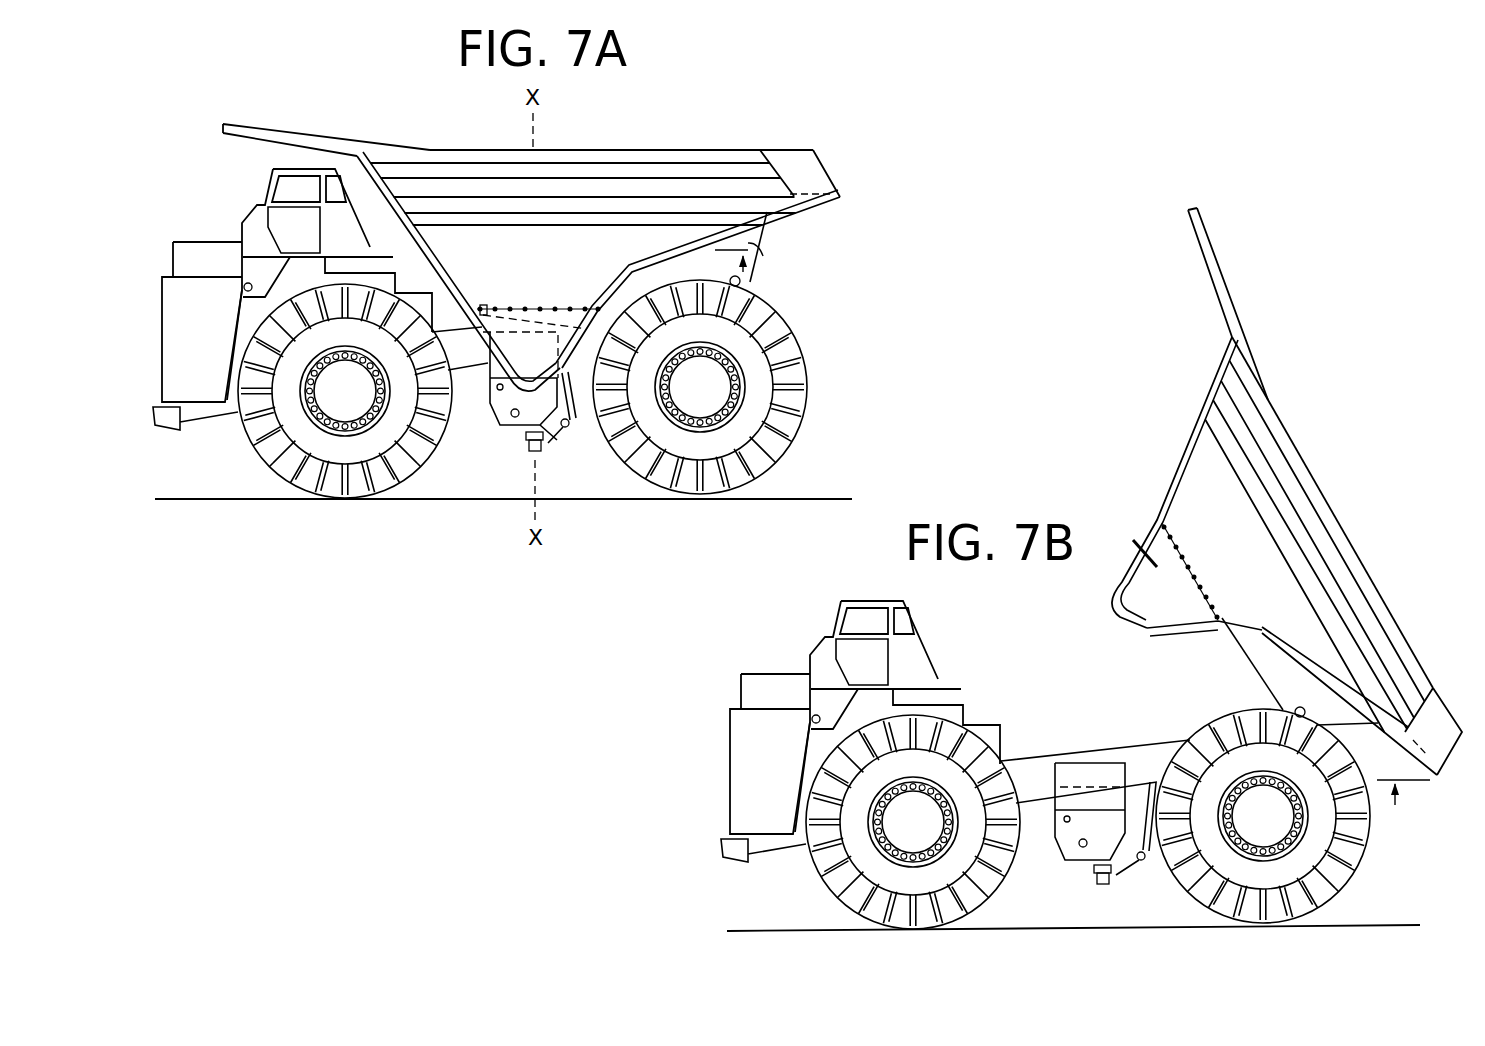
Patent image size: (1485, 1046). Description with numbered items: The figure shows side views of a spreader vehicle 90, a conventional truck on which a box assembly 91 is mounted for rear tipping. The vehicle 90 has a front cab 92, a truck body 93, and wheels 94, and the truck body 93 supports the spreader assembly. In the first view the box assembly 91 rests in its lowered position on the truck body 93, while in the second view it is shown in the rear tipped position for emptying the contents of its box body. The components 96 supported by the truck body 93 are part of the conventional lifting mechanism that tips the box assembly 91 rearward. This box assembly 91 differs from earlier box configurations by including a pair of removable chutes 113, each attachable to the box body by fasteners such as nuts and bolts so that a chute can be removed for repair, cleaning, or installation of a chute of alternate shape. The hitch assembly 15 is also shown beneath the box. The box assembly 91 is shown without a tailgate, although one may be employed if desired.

In FIG. 7A, the spreader vehicle 90 is at (590, 120).
In FIG. 7A, the box assembly 91 is at (727, 138).
In FIG. 7A, the front cab 92 is at (241, 190).
In FIG. 7A, the truck body 93 is at (478, 367).
In FIG. 7A, the wheels 94 is at (242, 433).
In FIG. 7A, the hitch assembly 15 is at (567, 452).
In FIG. 7B, the components 96 is at (1065, 836).
In FIG. 7B, the removable chutes 113 is at (1196, 628).